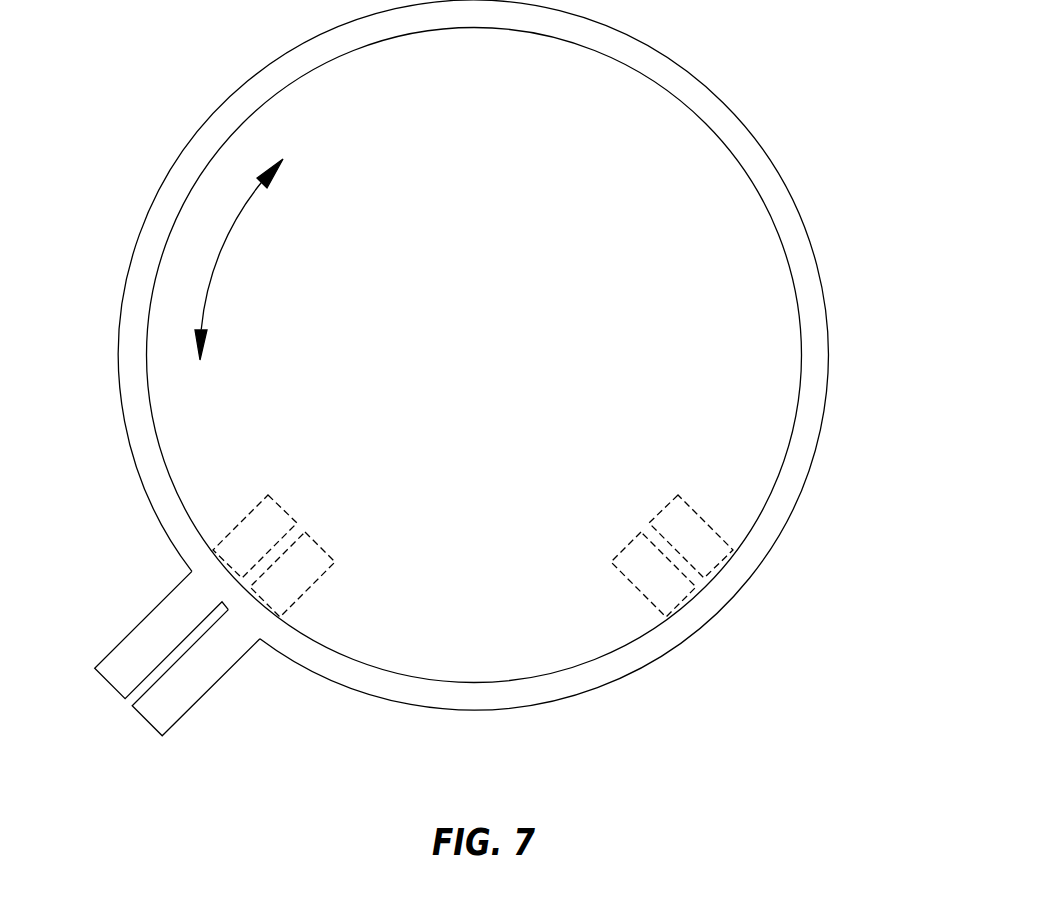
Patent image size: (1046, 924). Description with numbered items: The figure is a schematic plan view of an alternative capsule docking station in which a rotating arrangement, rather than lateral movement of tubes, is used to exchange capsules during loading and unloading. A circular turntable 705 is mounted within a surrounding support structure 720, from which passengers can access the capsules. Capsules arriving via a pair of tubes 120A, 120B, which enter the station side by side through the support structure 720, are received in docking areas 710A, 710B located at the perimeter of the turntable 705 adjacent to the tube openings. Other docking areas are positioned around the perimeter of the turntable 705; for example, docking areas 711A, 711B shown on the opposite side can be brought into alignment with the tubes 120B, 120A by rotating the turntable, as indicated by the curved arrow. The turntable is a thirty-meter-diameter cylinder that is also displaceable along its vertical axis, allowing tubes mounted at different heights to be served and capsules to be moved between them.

The support structure 720 is at (645, 45).
The turntable 705 is at (489, 366).
The docking area 710A is at (247, 518).
The docking area 710B is at (305, 590).
The docking area 711A is at (640, 590).
The docking area 711B is at (712, 522).
The tube 120A is at (187, 710).
The tube 120B is at (142, 622).